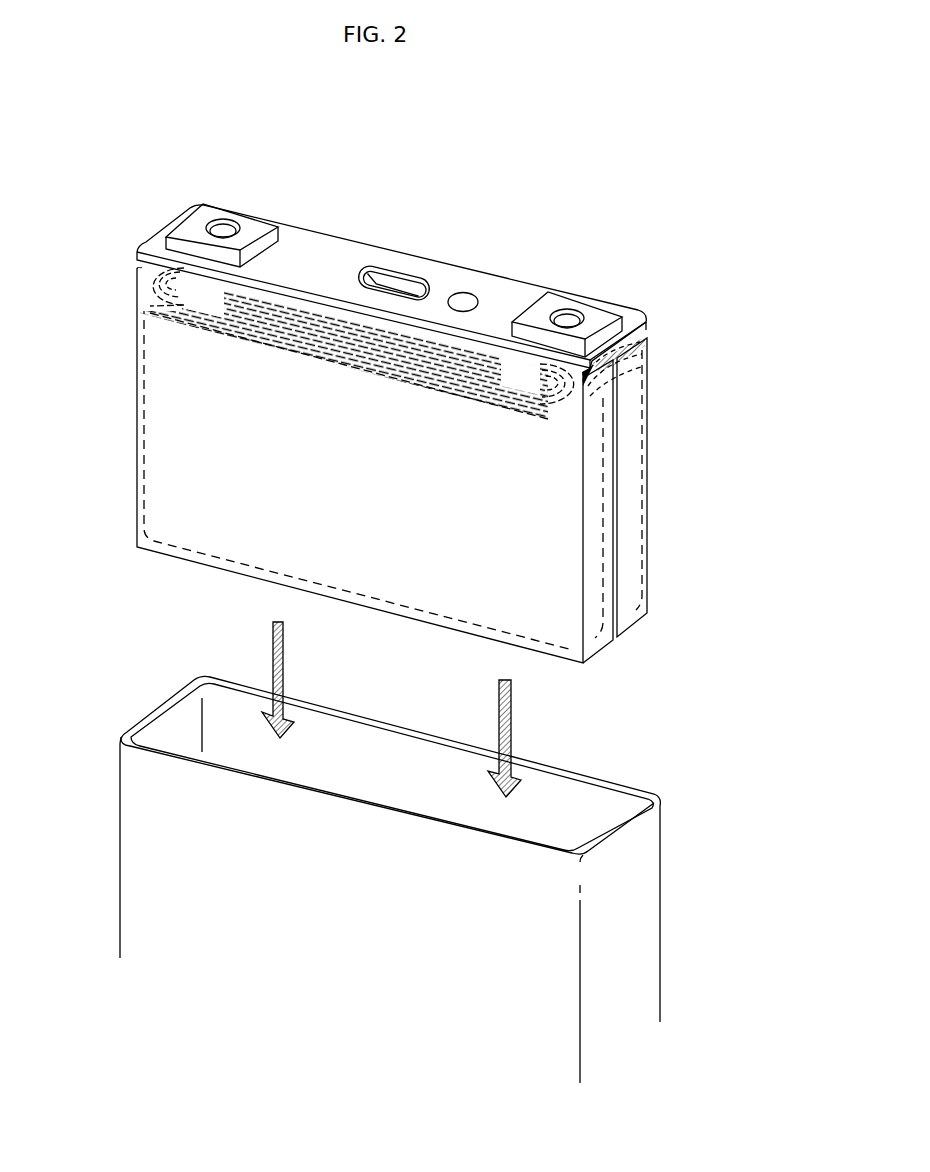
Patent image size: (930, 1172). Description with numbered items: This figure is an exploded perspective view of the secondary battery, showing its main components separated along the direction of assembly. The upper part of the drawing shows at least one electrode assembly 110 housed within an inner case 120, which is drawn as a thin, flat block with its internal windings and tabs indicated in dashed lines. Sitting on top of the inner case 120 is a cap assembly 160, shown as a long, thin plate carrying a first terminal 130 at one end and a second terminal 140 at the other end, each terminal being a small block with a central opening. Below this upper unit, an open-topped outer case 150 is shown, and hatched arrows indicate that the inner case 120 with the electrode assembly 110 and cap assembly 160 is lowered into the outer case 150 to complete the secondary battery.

The electrode assembly 110 is at (572, 494).
The inner case 120 is at (136, 408).
The first terminal 130 is at (230, 218).
The second terminal 140 is at (582, 308).
The outer case 150 is at (130, 877).
The cap assembly 160 is at (338, 248).